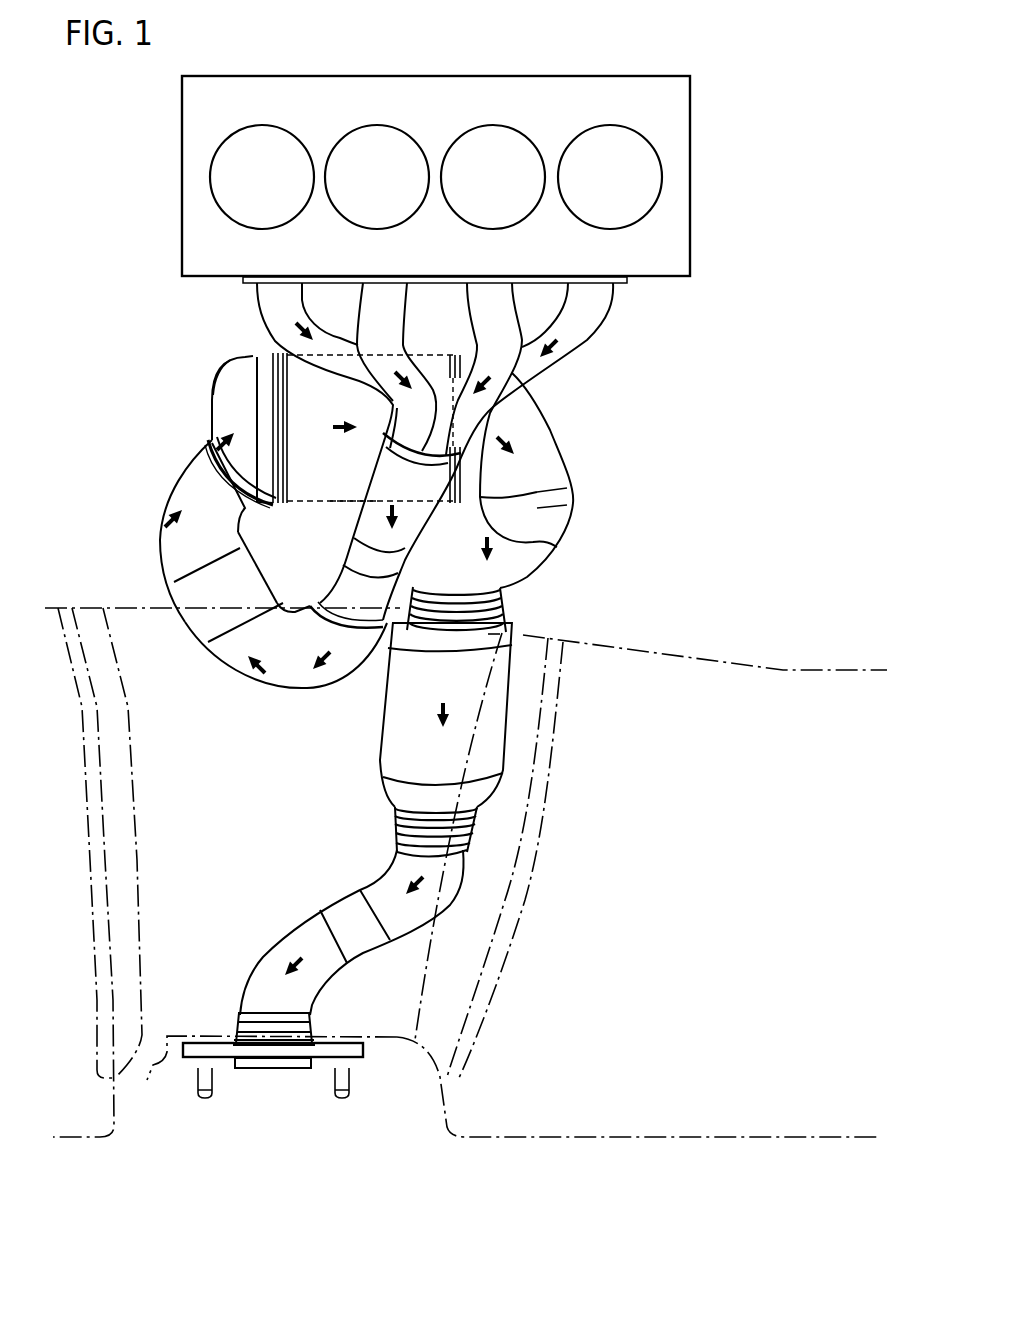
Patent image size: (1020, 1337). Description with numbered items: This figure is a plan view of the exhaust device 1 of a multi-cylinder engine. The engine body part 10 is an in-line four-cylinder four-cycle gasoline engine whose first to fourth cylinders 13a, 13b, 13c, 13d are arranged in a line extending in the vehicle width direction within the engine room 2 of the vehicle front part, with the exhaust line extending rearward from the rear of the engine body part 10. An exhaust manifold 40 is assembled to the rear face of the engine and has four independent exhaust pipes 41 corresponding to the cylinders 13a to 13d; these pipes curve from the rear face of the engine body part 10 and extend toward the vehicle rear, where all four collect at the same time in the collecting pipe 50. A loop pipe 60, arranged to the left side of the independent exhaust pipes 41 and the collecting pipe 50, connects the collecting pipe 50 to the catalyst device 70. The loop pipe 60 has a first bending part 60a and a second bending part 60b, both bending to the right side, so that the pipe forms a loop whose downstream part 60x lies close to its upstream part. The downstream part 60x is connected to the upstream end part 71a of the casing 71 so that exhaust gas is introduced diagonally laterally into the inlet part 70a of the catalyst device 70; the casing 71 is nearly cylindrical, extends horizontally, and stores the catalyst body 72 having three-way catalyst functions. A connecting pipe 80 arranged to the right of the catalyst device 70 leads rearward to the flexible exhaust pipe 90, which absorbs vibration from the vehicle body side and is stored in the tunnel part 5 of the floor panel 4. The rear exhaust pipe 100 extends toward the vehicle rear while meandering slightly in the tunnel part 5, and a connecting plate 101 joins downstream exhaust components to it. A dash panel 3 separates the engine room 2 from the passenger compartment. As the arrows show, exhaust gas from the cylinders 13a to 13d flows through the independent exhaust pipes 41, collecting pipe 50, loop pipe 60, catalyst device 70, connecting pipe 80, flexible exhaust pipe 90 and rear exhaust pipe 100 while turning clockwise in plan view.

The exhaust device 1 is at (682, 450).
The engine room 2 is at (826, 272).
The dash panel 3 is at (790, 670).
The floor panel 4 is at (447, 1108).
The tunnel part 5 is at (150, 1068).
The engine body part 10 is at (484, 179).
The first cylinder 13a is at (284, 185).
The second cylinder 13b is at (400, 185).
The third cylinder 13c is at (515, 185).
The fourth cylinder 13d is at (633, 185).
The exhaust manifold 40 is at (625, 313).
The independent exhaust pipe 41 is at (270, 328).
The collecting pipe 50 is at (418, 556).
The loop pipe 60 is at (187, 635).
The first bending part 60a is at (285, 688).
The second bending part 60b is at (170, 547).
The downstream part 60x is at (207, 466).
The catalyst device 70 is at (195, 386).
The inlet part 70a is at (215, 482).
The casing 71 is at (294, 510).
The upstream end part 71a is at (237, 372).
The catalyst body 72 is at (347, 473).
The connecting pipe 80 is at (550, 450).
The flexible exhaust pipe 90 is at (392, 737).
The rear exhaust pipe 100 is at (303, 890).
The connecting plate 101 is at (218, 1050).